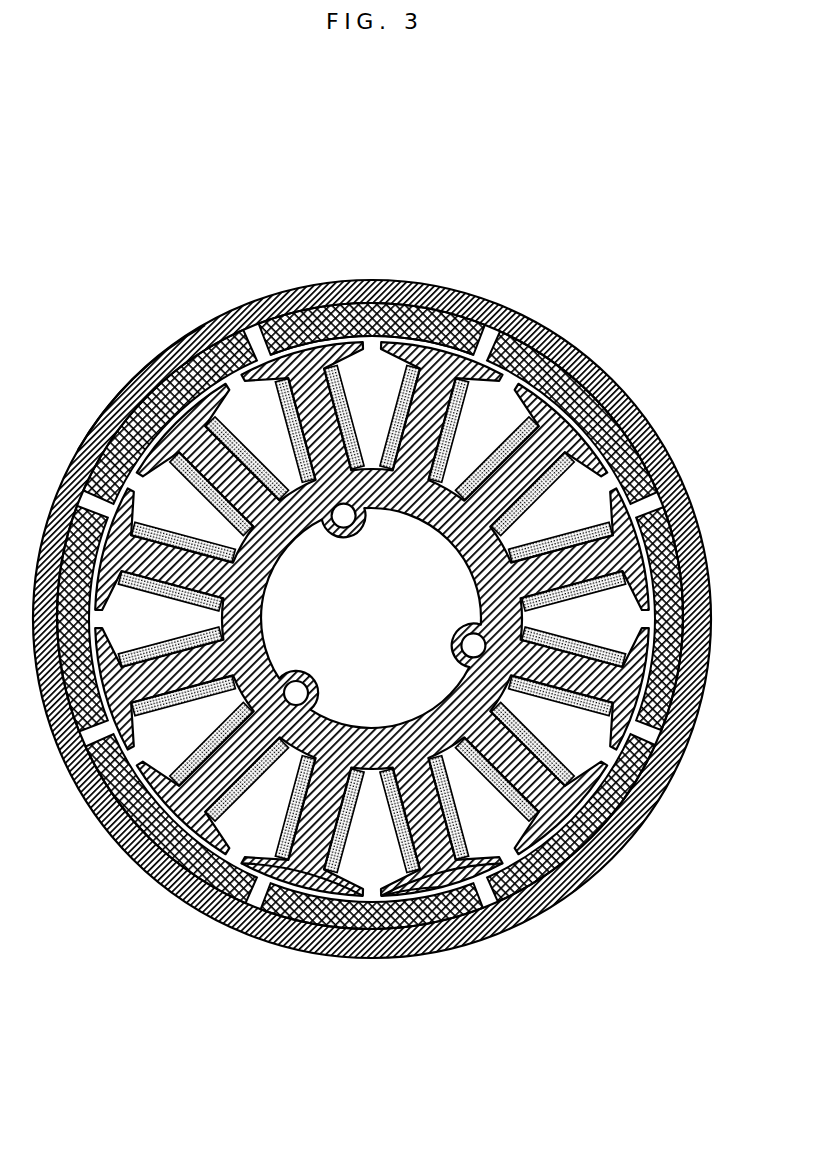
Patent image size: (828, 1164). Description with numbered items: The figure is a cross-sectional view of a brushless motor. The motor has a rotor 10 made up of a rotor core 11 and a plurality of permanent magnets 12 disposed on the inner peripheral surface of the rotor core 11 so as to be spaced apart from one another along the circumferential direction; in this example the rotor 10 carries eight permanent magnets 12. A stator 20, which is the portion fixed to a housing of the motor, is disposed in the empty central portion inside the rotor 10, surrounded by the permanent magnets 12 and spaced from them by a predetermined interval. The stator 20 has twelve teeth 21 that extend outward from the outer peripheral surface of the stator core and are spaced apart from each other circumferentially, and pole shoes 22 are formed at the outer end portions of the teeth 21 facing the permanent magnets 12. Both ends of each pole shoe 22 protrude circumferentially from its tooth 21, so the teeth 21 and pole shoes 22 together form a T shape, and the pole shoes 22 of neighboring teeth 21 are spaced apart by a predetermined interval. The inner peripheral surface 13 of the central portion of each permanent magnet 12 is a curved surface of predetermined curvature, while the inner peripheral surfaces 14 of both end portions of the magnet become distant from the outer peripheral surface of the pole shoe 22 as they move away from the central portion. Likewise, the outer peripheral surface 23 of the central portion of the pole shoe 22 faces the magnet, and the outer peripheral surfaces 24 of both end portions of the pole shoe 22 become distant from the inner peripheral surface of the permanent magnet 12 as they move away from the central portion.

The rotor 10 is at (372, 531).
The rotor core 11 is at (352, 298).
The permanent magnet 12 is at (400, 312).
The inner peripheral surface of central portion of permanent magnet 13 is at (350, 333).
The inner peripheral surfaces of both end portions of permanent magnet 14 is at (85, 432).
The stator 20 is at (372, 714).
The stator teeth 21 is at (427, 827).
The pole shoe 22 is at (427, 893).
The outer peripheral surface of central portion of pole shoe 23 is at (443, 896).
The outer peripheral surfaces of both end portions of pole shoe 24 is at (302, 945).